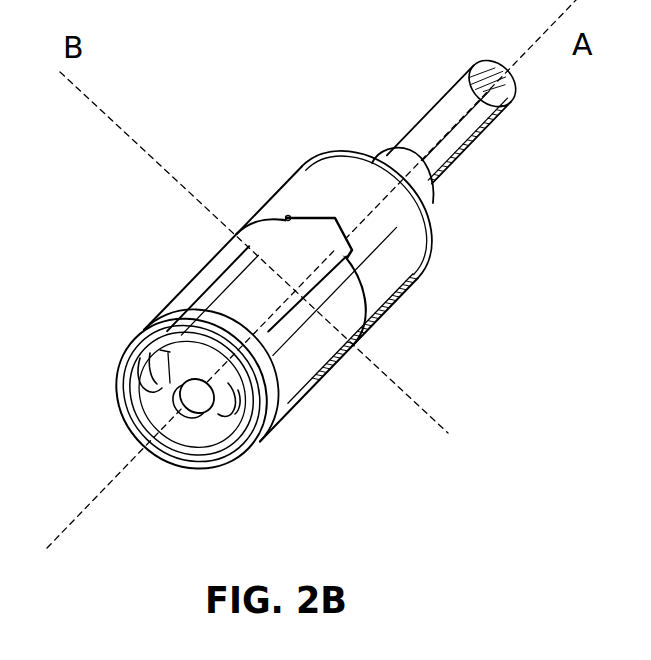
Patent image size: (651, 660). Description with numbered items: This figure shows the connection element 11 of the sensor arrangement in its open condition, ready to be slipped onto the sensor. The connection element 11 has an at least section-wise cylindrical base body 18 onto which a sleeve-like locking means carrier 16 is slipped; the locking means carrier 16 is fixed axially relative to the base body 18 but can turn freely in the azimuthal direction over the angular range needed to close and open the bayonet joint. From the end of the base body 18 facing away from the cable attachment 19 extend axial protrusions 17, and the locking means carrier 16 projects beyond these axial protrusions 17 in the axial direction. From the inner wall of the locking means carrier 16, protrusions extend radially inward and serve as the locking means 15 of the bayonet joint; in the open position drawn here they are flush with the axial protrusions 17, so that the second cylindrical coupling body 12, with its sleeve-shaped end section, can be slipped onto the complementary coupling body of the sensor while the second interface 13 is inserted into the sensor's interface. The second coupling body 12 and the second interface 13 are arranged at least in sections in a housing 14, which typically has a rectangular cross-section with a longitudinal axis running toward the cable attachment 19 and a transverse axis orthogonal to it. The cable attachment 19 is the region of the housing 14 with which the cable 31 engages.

The connection element 11 is at (225, 172).
The second coupling body 12 is at (194, 327).
The second interface 13 is at (193, 405).
The housing 14 is at (316, 178).
The locking means 15 is at (140, 380).
The locking means carrier 16 is at (315, 352).
The axial protrusions 17 is at (153, 333).
The base body 18 is at (388, 271).
The cable attachment 19 is at (432, 192).
The cable 31 is at (438, 121).